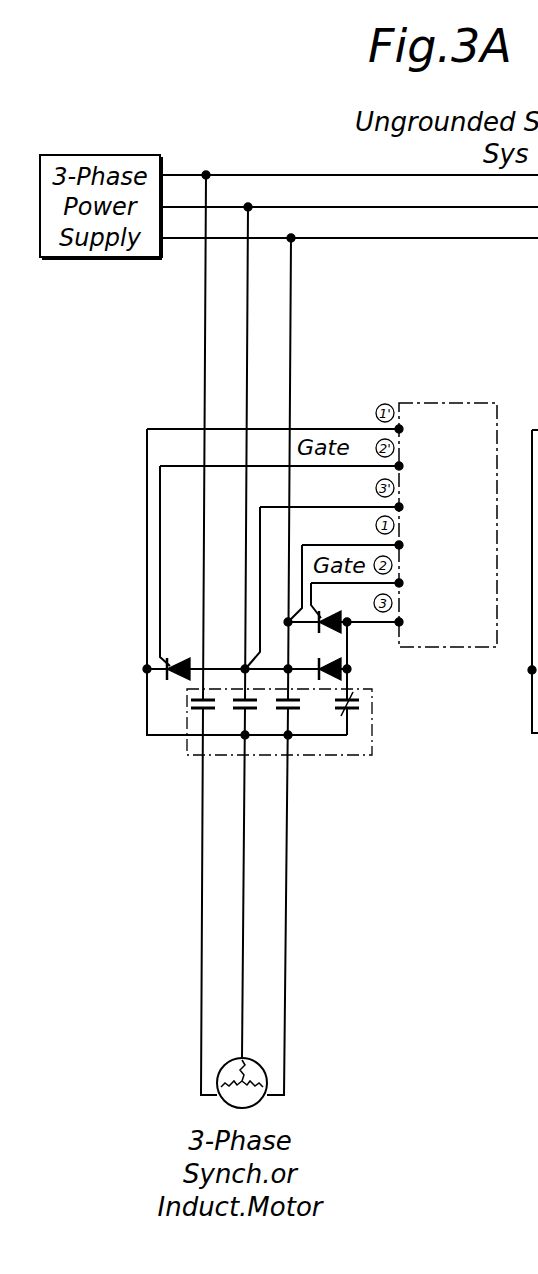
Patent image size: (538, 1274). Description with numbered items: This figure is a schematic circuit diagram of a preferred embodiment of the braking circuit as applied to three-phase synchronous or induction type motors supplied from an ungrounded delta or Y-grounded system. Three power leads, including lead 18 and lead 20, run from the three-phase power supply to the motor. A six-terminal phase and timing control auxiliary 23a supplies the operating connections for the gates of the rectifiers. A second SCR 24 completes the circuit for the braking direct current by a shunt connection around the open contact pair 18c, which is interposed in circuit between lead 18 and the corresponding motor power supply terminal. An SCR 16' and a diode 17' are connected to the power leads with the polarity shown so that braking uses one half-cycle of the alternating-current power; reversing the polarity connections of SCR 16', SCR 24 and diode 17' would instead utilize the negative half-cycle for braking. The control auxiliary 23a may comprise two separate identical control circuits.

The lead 18 is at (250, 318).
The power line conductor 20 is at (206, 360).
The phase and timing control auxiliary 23a is at (463, 410).
The second SCR 24 is at (183, 660).
The SCR 16' is at (379, 638).
The diode 17' is at (366, 674).
The open contact pair 18c is at (240, 705).